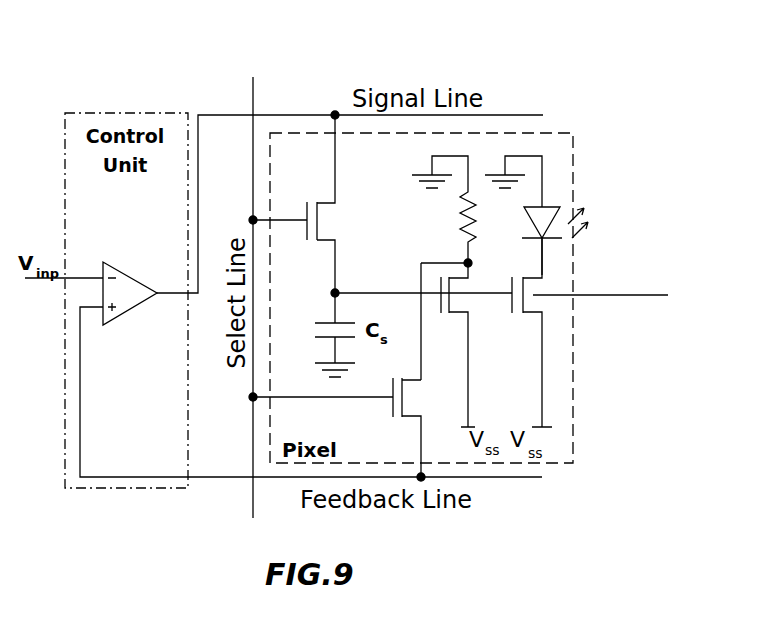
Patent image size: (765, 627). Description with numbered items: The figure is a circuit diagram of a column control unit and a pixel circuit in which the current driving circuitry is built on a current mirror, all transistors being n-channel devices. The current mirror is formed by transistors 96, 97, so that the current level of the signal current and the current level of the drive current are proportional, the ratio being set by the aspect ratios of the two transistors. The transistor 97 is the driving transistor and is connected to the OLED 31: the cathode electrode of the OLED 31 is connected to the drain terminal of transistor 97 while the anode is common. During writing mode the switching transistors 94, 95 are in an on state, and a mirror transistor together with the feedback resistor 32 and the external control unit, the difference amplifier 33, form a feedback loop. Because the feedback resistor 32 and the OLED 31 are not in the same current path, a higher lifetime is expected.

The OLED 31 is at (558, 210).
The feedback resistor 32 is at (458, 222).
The difference amplifier 33 is at (110, 268).
The transistor 94 is at (348, 238).
The transistor 95 is at (455, 293).
The transistor 96 is at (415, 396).
The driving transistor 97 is at (619, 297).